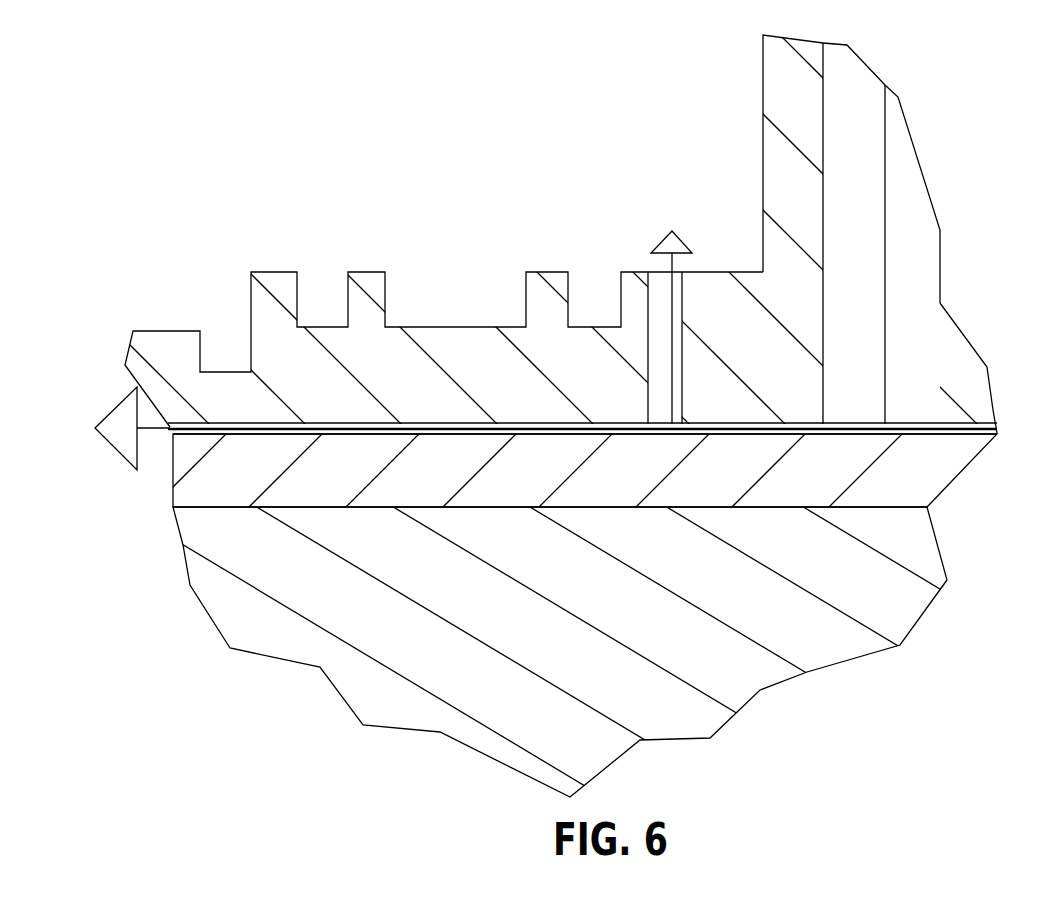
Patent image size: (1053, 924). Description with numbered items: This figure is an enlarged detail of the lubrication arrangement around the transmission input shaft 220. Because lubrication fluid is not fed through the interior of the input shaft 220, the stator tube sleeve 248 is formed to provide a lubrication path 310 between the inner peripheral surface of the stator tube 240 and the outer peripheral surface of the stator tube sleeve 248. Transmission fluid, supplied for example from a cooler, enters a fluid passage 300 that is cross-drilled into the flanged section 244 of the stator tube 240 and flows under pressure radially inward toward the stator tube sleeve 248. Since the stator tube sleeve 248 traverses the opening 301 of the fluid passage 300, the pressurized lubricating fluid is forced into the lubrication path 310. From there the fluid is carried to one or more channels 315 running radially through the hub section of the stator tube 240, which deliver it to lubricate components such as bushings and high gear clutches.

The input shaft 220 is at (563, 570).
The stator tube 240 is at (245, 395).
The flanged section 244 is at (792, 112).
The stator tube sleeve 248 is at (608, 477).
The fluid passage 300 is at (899, 273).
The opening 301 is at (957, 432).
The lubrication path 310 is at (582, 302).
The channel 315 is at (666, 330).